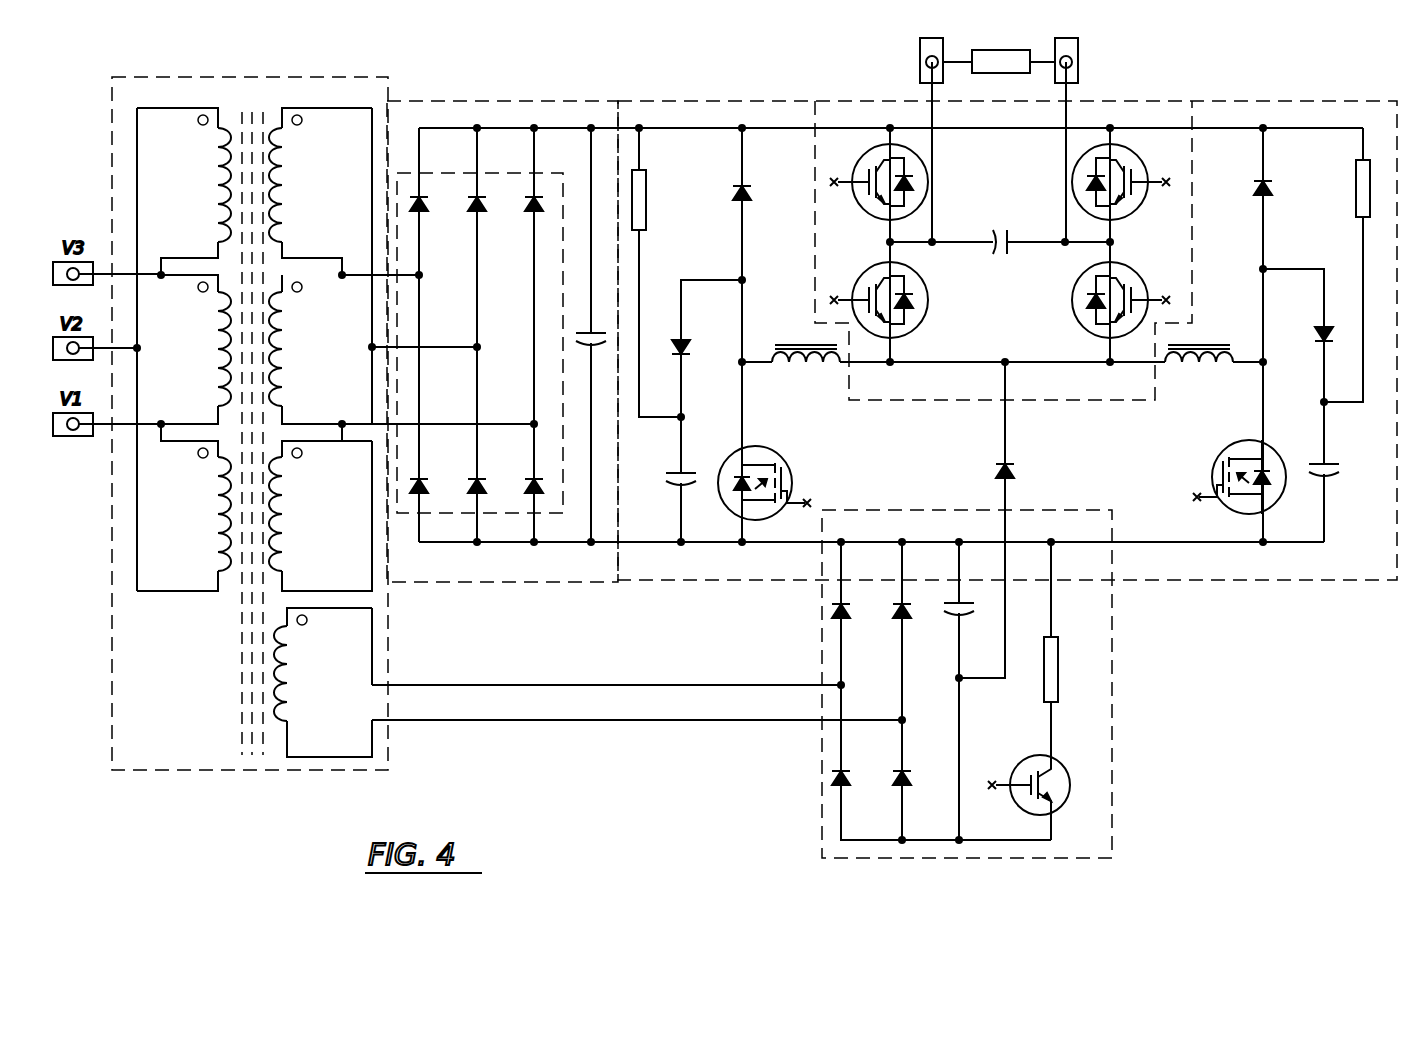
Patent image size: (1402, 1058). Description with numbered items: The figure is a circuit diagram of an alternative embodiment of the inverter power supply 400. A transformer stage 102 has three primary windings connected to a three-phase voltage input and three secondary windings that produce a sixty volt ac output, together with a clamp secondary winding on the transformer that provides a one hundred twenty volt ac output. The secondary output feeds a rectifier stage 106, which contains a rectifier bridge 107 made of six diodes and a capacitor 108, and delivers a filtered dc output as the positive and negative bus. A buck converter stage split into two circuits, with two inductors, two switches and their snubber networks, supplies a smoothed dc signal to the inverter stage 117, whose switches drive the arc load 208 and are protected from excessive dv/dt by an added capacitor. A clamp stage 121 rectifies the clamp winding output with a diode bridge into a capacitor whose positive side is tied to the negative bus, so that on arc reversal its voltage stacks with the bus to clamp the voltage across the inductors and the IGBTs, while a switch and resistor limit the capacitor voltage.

The transformer stage 102 is at (262, 77).
The rectifier stage 106 is at (503, 103).
The rectifier bridge 107 is at (543, 173).
The capacitor 108 is at (614, 316).
The inverter stage 117 is at (672, 583).
The clamp stage 121 is at (1112, 685).
The arc load 208 is at (992, 73).
The power supply 400 is at (600, 742).